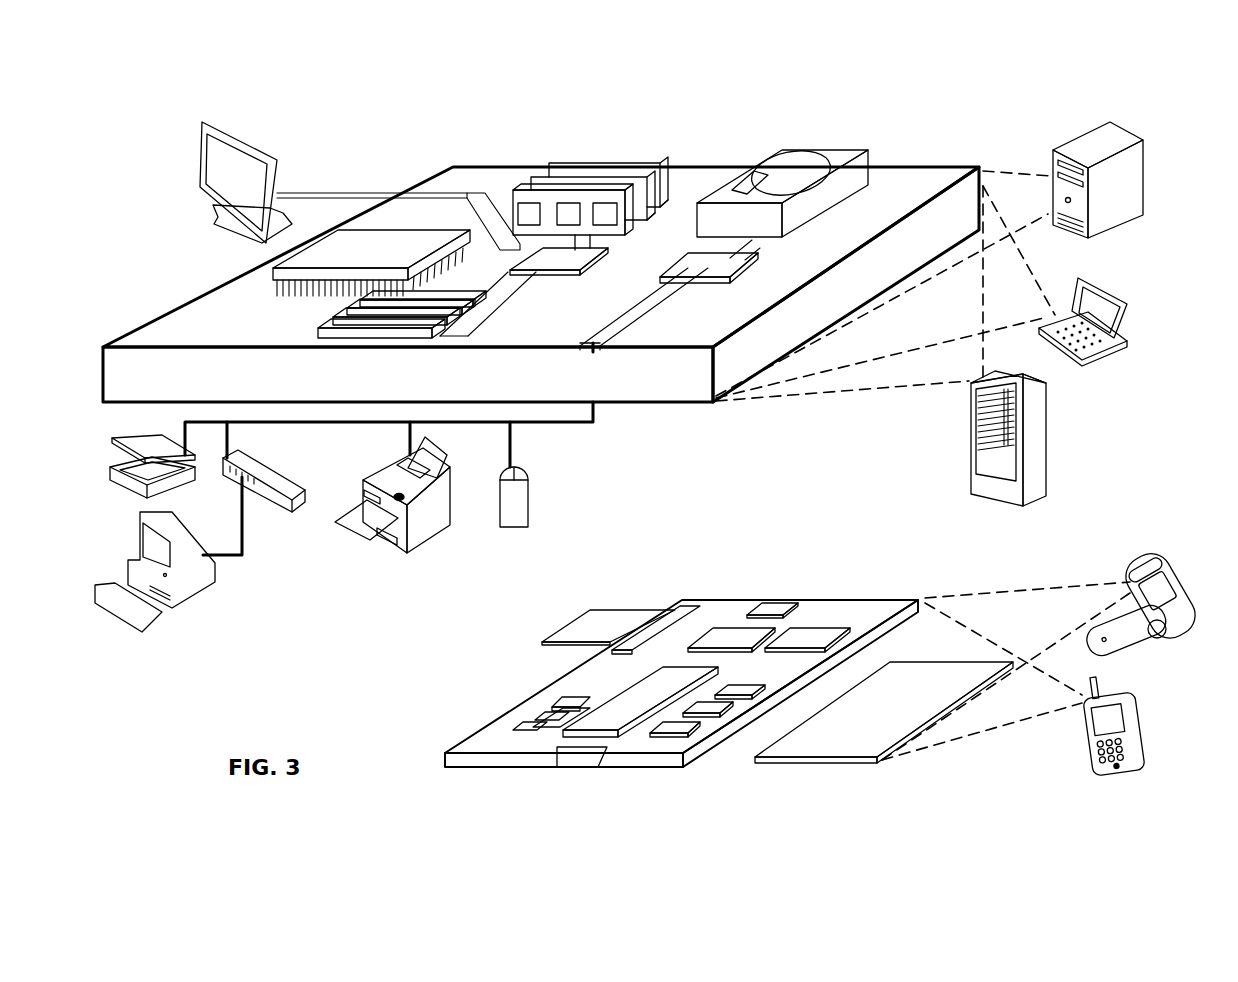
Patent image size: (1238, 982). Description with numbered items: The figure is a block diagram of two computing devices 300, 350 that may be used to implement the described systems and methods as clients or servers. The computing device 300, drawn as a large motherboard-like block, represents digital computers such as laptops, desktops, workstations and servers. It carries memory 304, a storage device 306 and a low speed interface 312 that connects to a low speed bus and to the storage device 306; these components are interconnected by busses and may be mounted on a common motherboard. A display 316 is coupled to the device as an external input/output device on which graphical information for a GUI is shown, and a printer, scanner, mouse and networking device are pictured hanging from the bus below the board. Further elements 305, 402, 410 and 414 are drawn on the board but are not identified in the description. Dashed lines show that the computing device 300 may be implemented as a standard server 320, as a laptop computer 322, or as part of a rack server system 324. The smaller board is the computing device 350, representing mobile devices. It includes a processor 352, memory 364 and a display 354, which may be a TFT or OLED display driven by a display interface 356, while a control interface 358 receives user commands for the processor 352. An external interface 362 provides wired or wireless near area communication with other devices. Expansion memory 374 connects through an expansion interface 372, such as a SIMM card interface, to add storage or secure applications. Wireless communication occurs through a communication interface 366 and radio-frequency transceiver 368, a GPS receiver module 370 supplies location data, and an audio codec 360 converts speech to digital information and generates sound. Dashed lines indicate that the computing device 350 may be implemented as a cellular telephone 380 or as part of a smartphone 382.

The computing device 300 is at (423, 139).
The memory 304 is at (575, 162).
The memory module 305 is at (545, 164).
The storage device 306 is at (783, 148).
The low speed interface 312 is at (698, 263).
The display 316 is at (209, 122).
The standard server 320 is at (1063, 142).
The laptop computer 322 is at (1094, 364).
The rack server system 324 is at (969, 475).
The computing device 350 is at (508, 652).
The processor 352 is at (619, 718).
The display 354 is at (857, 738).
The display interface 356 is at (665, 730).
The control interface 358 is at (712, 714).
The audio codec 360 is at (745, 690).
The external interface 362 is at (577, 754).
The memory 364 is at (545, 717).
The communication interface 366 is at (725, 632).
The transceiver 368 is at (811, 635).
The GPS receiver module 370 is at (783, 605).
The expansion interface 372 is at (665, 612).
The expansion memory 374 is at (580, 620).
The cellular telephone 380 is at (1142, 562).
The smartphone 382 is at (1087, 729).
The processor 402 is at (266, 281).
The memory 410 is at (333, 318).
The bus connector 414 is at (595, 348).